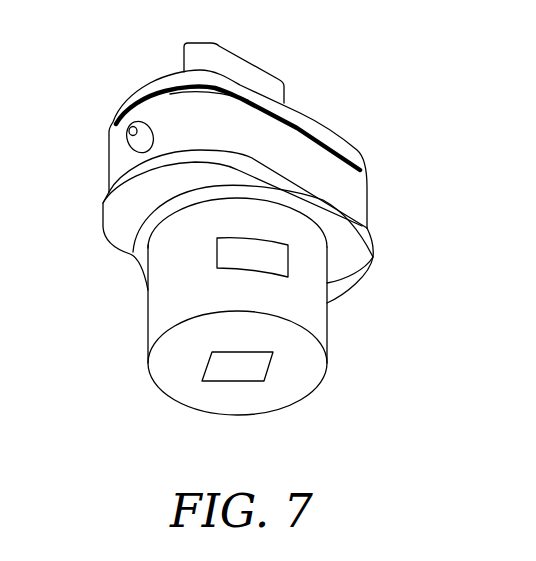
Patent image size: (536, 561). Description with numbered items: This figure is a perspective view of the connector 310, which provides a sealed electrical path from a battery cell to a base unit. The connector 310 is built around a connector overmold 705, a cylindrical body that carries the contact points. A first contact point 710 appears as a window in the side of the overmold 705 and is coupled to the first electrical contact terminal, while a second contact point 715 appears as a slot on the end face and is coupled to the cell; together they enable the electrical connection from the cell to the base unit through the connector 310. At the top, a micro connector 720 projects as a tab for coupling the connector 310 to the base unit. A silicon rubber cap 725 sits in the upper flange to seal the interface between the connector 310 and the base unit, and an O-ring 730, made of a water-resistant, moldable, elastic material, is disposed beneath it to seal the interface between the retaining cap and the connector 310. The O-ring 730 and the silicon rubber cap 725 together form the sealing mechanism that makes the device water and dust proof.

The connector 310 is at (427, 77).
The connector overmold 705 is at (152, 313).
The first contact point 710 is at (280, 242).
The second contact point 715 is at (270, 366).
The micro connector 720 is at (183, 52).
The silicon rubber cap 725 is at (117, 143).
The O-ring 730 is at (137, 258).